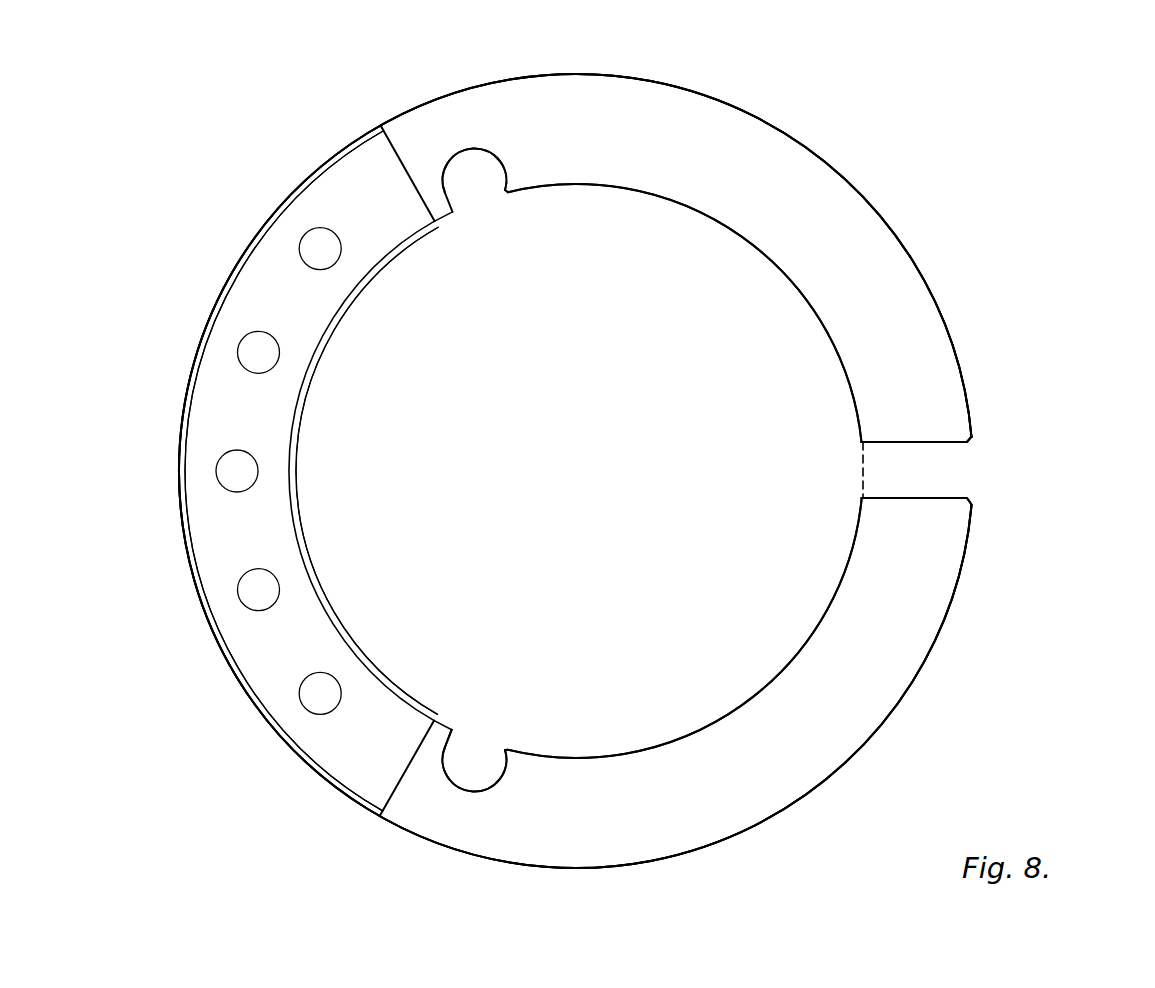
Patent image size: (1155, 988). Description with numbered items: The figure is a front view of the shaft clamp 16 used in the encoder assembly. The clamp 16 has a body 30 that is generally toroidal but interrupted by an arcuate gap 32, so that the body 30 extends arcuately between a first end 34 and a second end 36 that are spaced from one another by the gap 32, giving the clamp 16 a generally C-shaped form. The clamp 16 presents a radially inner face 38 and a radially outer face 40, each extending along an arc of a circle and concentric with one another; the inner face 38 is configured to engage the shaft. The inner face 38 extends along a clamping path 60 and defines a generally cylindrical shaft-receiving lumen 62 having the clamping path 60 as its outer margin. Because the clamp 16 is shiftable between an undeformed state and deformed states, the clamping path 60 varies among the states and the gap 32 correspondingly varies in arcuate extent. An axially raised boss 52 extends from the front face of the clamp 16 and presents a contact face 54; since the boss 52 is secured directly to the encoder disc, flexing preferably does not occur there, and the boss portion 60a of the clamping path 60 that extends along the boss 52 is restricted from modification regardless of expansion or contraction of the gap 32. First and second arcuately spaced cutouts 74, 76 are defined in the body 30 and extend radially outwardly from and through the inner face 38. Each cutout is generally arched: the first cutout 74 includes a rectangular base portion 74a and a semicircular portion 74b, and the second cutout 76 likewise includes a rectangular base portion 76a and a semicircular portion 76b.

The shaft clamp 16 is at (845, 110).
The body 30 is at (886, 268).
The gap 32 is at (980, 467).
The first end 34 is at (928, 418).
The second end 36 is at (940, 530).
The radially inner face 38 is at (330, 592).
The radially outer face 40 is at (657, 78).
The axially raised boss 52 is at (352, 178).
The contact face 54 is at (218, 404).
The clamping path 60 is at (656, 214).
The boss portion 60a is at (340, 334).
The shaft-receiving lumen 62 is at (652, 686).
The first cutout 74 is at (499, 157).
The rectangular base portion 74a is at (487, 212).
The semicircular portion 74b is at (465, 146).
The second cutout 76 is at (446, 777).
The rectangular base portion 76a is at (488, 731).
The semicircular portion 76b is at (481, 794).